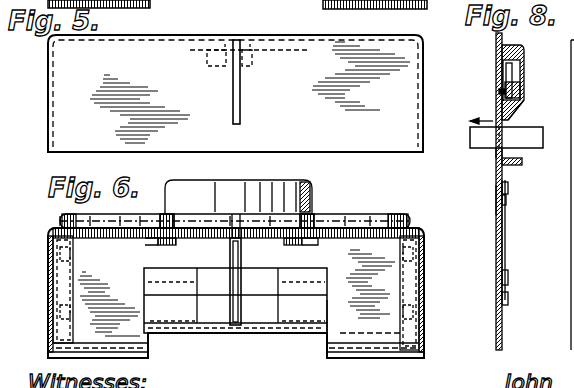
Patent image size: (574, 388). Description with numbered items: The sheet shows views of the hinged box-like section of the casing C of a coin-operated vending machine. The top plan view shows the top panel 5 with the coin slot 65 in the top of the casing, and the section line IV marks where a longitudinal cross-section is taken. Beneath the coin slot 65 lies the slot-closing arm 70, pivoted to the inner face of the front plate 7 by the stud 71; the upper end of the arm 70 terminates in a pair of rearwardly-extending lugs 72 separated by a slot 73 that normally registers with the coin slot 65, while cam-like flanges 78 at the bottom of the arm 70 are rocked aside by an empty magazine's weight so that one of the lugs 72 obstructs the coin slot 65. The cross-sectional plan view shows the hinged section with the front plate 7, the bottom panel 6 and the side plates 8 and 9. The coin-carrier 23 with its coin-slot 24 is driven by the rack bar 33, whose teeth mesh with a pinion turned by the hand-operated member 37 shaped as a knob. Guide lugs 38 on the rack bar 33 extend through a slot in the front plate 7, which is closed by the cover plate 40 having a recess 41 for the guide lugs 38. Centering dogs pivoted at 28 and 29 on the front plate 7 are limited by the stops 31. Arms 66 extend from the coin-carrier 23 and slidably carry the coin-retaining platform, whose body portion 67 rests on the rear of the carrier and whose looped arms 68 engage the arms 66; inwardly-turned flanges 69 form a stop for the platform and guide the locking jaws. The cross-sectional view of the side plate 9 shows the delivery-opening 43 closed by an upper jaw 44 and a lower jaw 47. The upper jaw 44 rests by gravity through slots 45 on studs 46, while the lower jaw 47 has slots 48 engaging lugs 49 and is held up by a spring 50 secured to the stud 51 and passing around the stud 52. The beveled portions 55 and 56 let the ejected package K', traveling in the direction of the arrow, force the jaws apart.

In FIG. 5, the top panel 5 is at (347, 140).
In FIG. 6, the bottom panel 6 is at (362, 328).
In FIG. 5, the front plate 7 is at (366, 41).
In FIG. 6, the front plate 7 is at (357, 233).
In FIG. 5, the side plate 8 is at (423, 90).
In FIG. 6, the side plate 8 is at (424, 290).
In FIG. 5, the side plate 9 is at (52, 96).
In FIG. 6, the side plate 9 is at (52, 287).
In FIG. 8, the side plate 9 is at (498, 325).
In FIG. 6, the coin-carrier 23 is at (245, 259).
In FIG. 6, the coin-slot 24 is at (231, 256).
In FIG. 6, the pivot 28 is at (306, 238).
In FIG. 6, the pivot 29 is at (164, 238).
In FIG. 6, the stops 31 is at (165, 240).
In FIG. 6, the rack bar 33 is at (336, 230).
In FIG. 6, the hand-operated member 37 is at (222, 236).
In FIG. 6, the guide lugs 38 is at (176, 226).
In FIG. 6, the cover plate 40 is at (60, 220).
In FIG. 6, the recess 41 is at (89, 222).
In FIG. 8, the delivery-opening 43 is at (497, 150).
In FIG. 8, the upper jaw 44 is at (525, 48).
In FIG. 8, the slots 45 is at (511, 72).
In FIG. 8, the studs 46 is at (501, 92).
In FIG. 8, the lower jaw 47 is at (510, 182).
In FIG. 8, the slots 48 is at (500, 201).
In FIG. 8, the lugs 49 is at (508, 197).
In FIG. 8, the spring 50 is at (506, 250).
In FIG. 8, the stud 51 is at (507, 298).
In FIG. 8, the stud 52 is at (509, 278).
In FIG. 8, the beveled portion 55 is at (520, 118).
In FIG. 8, the beveled portion 56 is at (520, 163).
In FIG. 5, the coin slot 65 is at (241, 108).
In FIG. 6, the arms 66 is at (222, 296).
In FIG. 6, the body portion 67 is at (242, 334).
In FIG. 6, the arms 68 is at (153, 305).
In FIG. 6, the inwardly-turned flanges 69 is at (51, 352).
In FIG. 6, the arm 70 is at (212, 238).
In FIG. 6, the stud 71 is at (241, 238).
In FIG. 5, the lugs 72 is at (241, 68).
In FIG. 5, the slot 73 is at (222, 73).
In FIG. 5, the cam-like flanges 78 is at (187, 51).
In FIG. 6, the block B is at (310, 334).
In FIG. 6, the casing C is at (424, 228).
In FIG. 8, the ejected package K' is at (493, 143).
In FIG. 5, the section line IV— IV is at (276, 24).